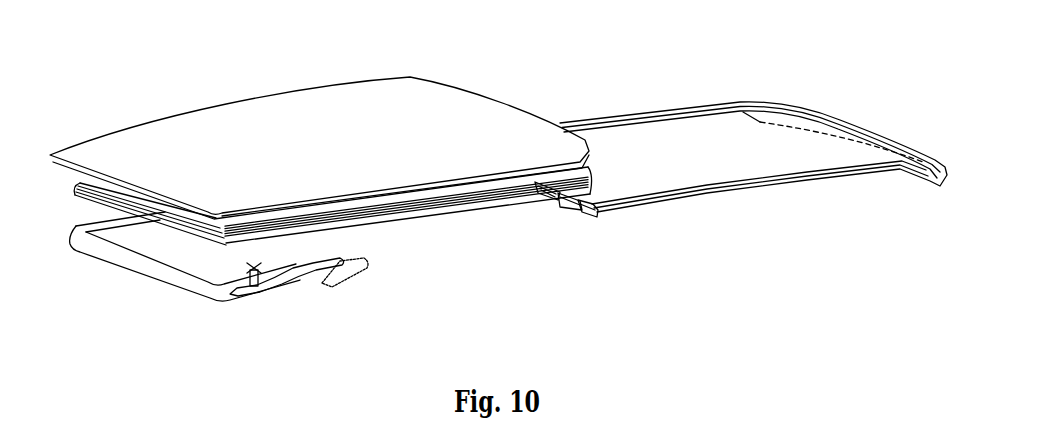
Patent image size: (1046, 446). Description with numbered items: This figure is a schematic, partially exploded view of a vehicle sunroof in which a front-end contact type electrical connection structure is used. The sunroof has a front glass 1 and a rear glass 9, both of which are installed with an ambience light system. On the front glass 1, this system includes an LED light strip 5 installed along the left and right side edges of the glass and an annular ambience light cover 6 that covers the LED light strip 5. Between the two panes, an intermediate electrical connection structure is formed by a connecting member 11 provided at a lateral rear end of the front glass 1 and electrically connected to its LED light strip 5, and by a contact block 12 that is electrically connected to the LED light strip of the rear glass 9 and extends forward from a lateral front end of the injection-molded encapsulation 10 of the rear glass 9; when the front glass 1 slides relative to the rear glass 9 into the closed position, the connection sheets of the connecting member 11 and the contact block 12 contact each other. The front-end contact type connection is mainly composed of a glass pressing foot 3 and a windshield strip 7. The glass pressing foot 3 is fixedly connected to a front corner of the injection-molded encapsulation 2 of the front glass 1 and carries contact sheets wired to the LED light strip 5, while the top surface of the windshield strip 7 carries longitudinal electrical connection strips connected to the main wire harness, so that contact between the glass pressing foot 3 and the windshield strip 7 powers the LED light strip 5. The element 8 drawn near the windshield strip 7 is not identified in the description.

The front glass 1 is at (250, 120).
The injection-molded encapsulation 2 is at (441, 174).
The glass pressing foot 3 is at (248, 285).
The LED light strip 5 is at (365, 216).
The annular ambience light cover 6 is at (225, 248).
The windshield strip 7 is at (272, 282).
The mounting strip 8 is at (345, 275).
The rear glass 9 is at (686, 132).
The injection-molded encapsulation 10 is at (590, 215).
The connecting member 11 is at (550, 203).
The contact block 12 is at (565, 210).